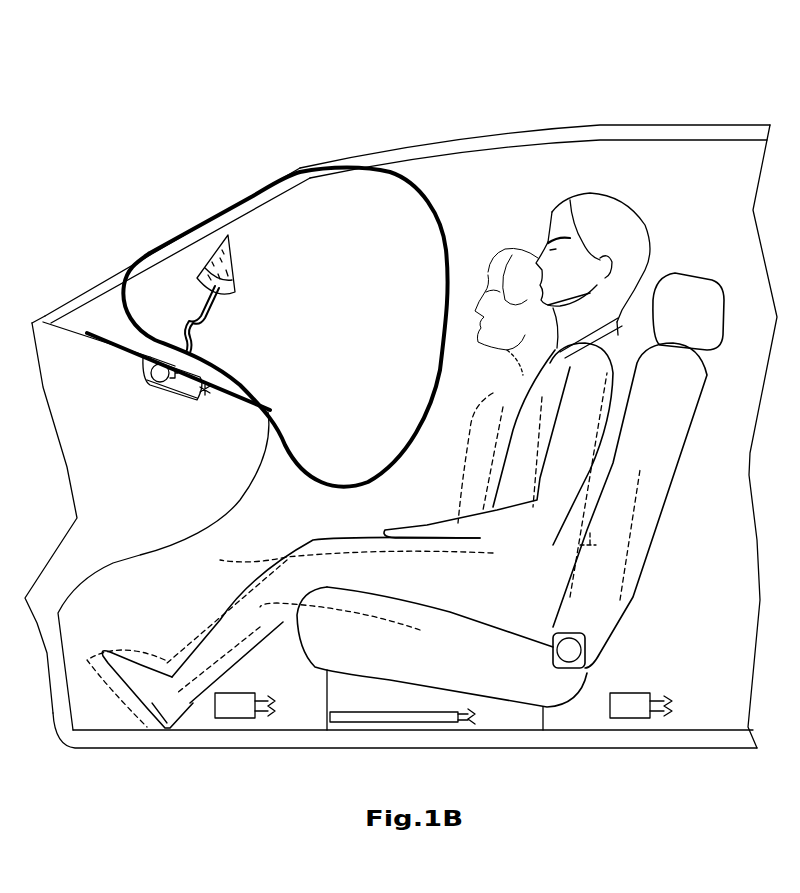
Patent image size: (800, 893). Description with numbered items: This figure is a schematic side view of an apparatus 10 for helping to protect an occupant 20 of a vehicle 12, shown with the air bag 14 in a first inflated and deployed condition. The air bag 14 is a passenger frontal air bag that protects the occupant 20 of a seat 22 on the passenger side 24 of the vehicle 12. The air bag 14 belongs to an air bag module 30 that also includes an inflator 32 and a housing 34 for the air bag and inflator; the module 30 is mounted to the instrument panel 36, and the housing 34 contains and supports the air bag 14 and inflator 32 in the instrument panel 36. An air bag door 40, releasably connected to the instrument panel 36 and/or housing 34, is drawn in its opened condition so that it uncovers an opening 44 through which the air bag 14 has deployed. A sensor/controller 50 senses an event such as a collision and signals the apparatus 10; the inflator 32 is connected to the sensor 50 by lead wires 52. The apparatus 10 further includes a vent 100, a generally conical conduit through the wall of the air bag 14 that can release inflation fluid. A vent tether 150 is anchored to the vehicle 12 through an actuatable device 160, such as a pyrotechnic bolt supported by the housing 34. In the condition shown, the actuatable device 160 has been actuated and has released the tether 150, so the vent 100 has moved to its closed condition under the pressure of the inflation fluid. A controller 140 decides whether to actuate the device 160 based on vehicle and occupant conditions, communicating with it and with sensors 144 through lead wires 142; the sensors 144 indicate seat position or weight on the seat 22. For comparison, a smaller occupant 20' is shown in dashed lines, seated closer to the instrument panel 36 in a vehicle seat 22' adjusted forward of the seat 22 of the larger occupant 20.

The apparatus 10 is at (176, 228).
The vehicle 12 is at (177, 163).
The air bag 14 is at (375, 205).
The occupant 20 is at (385, 443).
The occupant 20' is at (314, 456).
The seat 22 is at (510, 501).
The vehicle seat 22' is at (640, 486).
The passenger side 24 is at (250, 189).
The air bag module 30 is at (138, 386).
The inflator 32 is at (148, 387).
The housing 34 is at (143, 375).
The instrument panel 36 is at (65, 335).
The air bag door 40 is at (100, 341).
The opening 44 is at (161, 347).
The sensor/controller 50 is at (632, 708).
The lead wires 52 is at (657, 715).
The vent 100 is at (253, 253).
The controller 140 is at (232, 700).
The lead wires 142 is at (263, 720).
The sensors 144 is at (403, 717).
The vent tether 150 is at (208, 320).
The actuatable device 160 is at (203, 397).